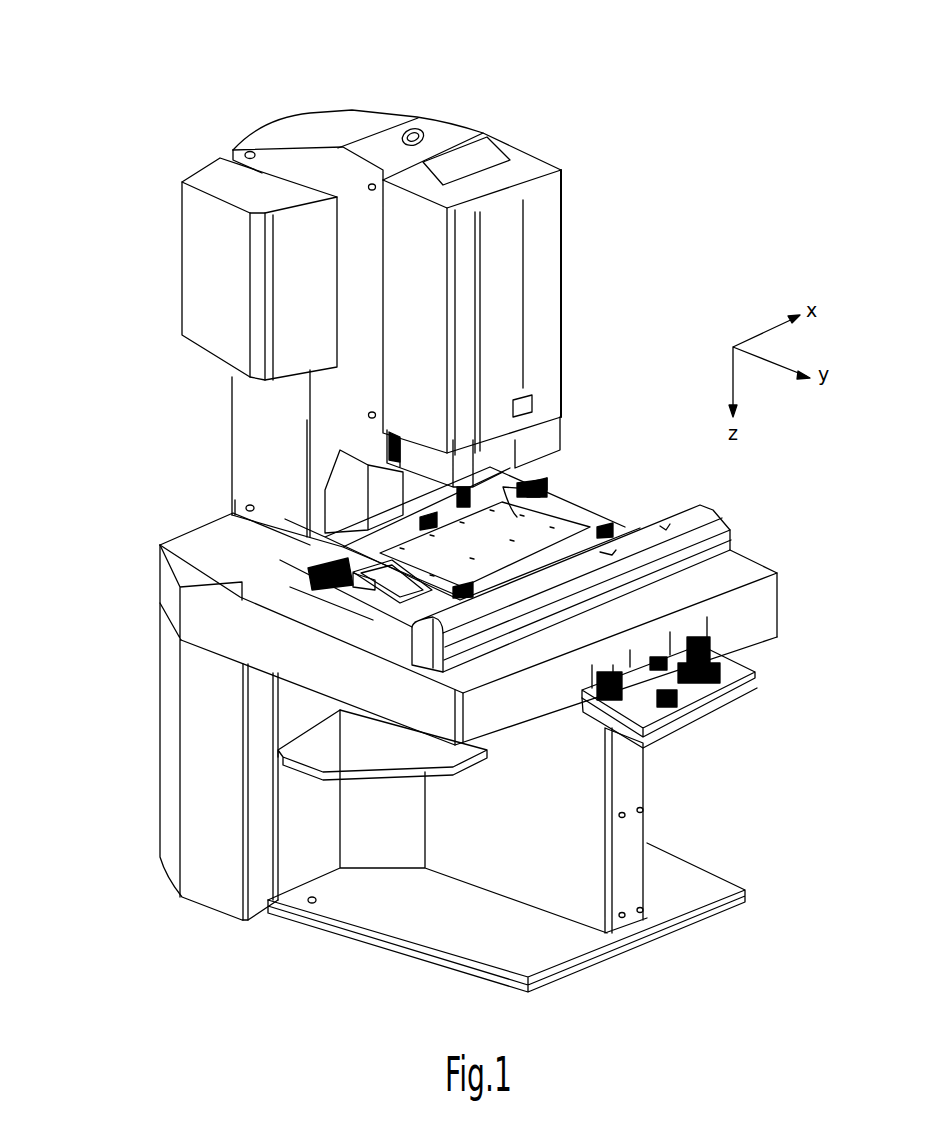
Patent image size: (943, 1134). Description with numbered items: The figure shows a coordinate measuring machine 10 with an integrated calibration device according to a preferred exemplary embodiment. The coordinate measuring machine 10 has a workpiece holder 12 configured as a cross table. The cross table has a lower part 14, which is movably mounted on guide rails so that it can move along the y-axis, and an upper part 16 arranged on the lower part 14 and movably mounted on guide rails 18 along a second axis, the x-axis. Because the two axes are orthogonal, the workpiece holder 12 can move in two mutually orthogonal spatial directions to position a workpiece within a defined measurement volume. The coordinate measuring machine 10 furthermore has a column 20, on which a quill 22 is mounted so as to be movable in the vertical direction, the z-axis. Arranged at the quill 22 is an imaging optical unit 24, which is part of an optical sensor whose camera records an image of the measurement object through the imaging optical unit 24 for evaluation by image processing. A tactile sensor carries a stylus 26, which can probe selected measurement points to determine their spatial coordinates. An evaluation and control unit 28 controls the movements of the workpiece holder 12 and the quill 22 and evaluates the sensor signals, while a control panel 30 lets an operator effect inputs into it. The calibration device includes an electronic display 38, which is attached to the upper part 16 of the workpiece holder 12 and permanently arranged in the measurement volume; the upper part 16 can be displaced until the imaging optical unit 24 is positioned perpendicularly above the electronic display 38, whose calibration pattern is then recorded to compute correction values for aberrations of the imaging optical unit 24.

The coordinate measuring machine 10 is at (660, 197).
The workpiece holder 12 is at (617, 507).
The lower part 14 is at (255, 560).
The upper part 16 is at (325, 537).
The guide rails 18 is at (340, 575).
The column 20 is at (313, 120).
The quill 22 is at (560, 440).
The imaging optical unit 24 is at (447, 553).
The stylus 26 is at (445, 507).
The evaluation and control unit 28 is at (207, 285).
The control panel 30 is at (733, 657).
The electronic display 38 is at (395, 597).